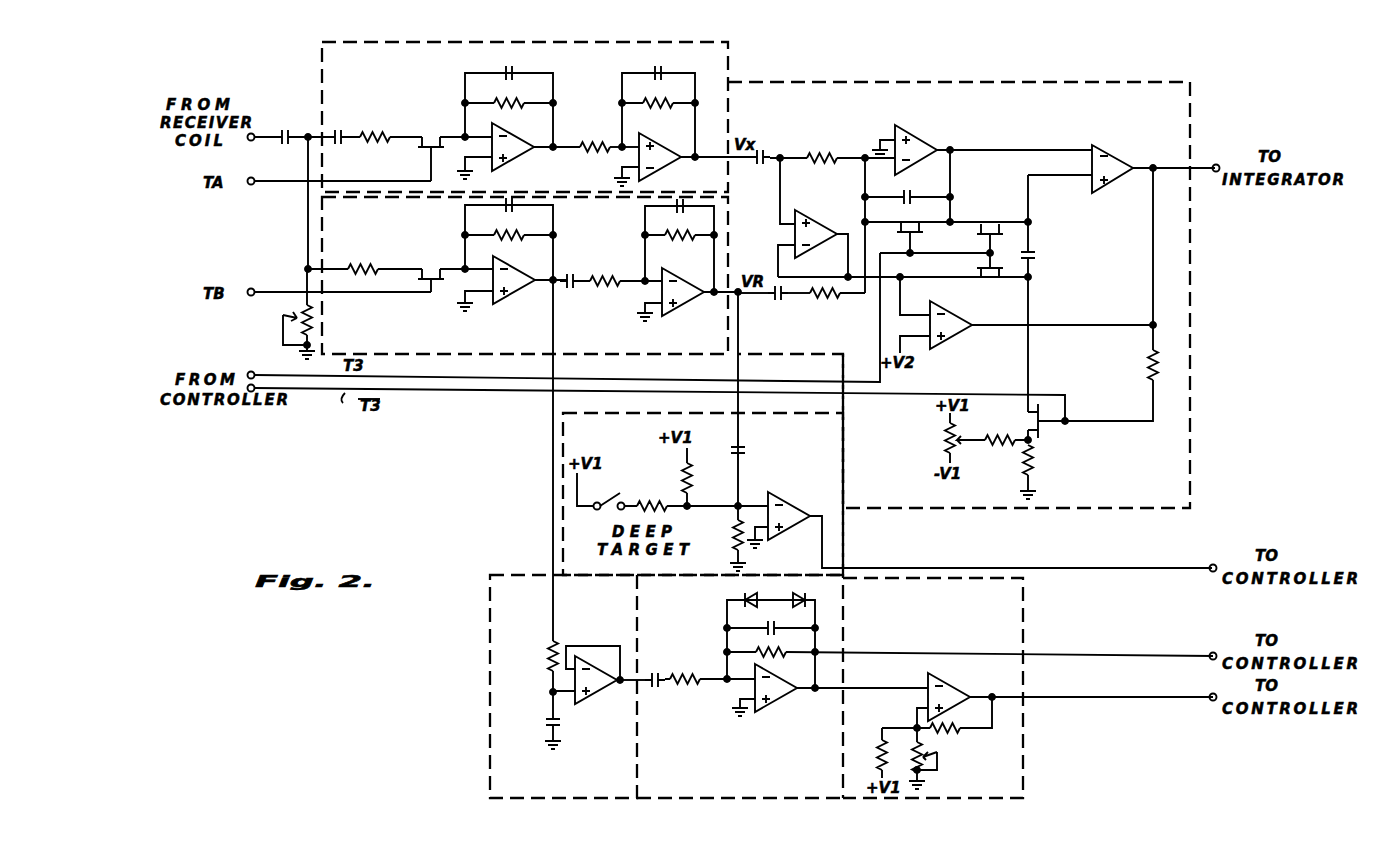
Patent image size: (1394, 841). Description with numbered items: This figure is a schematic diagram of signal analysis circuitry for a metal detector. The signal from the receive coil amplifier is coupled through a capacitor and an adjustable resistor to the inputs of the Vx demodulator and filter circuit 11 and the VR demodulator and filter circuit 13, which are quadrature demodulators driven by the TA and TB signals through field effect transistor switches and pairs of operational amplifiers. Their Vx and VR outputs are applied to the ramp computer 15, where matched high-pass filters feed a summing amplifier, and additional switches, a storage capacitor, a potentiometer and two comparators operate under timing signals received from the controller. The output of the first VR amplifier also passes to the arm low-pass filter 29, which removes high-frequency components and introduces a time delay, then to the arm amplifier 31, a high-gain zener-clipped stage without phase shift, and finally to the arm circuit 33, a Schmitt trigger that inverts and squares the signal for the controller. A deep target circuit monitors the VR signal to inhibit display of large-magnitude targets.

The Vx demodulator and filter circuit 11 is at (328, 96).
The VR demodulator and filter circuit 13 is at (432, 350).
The ramp computer 15 is at (1097, 85).
The arm low-pass filter 29 is at (490, 706).
The arm amplifier 31 is at (730, 798).
The arm circuit 33 is at (1017, 750).